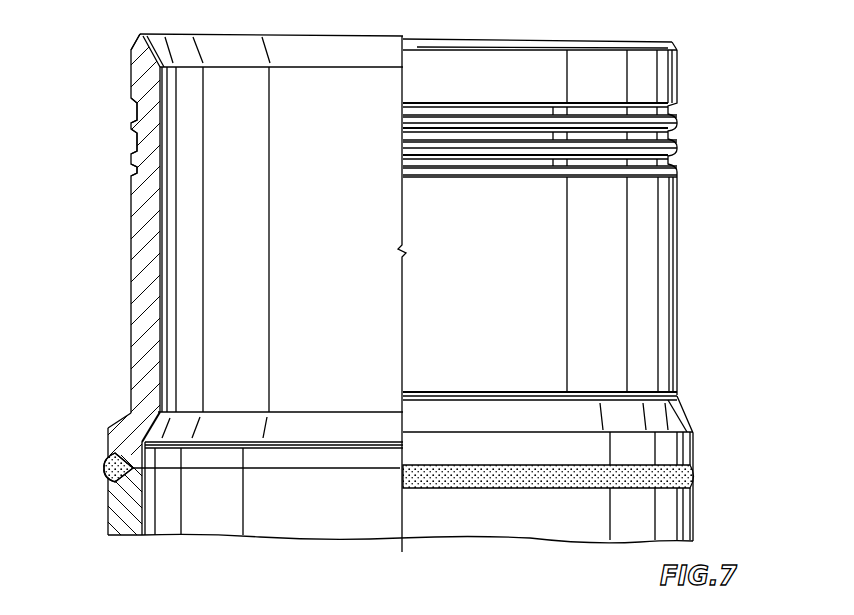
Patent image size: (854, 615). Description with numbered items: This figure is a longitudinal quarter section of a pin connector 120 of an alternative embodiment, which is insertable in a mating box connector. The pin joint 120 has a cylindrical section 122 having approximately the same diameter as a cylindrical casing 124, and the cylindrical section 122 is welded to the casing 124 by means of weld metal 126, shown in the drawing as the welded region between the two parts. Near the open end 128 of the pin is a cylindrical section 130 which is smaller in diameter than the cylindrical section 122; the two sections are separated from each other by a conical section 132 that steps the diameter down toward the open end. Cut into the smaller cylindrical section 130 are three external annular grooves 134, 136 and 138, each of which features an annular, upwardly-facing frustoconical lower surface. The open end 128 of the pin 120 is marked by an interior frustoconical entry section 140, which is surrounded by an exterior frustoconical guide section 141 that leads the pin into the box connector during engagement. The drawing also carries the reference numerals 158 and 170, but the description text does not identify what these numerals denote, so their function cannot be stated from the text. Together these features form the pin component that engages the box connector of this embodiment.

The pin connector 120 is at (660, 273).
The cylindrical section 122 is at (695, 448).
The cylindrical casing 124 is at (695, 516).
The weld metal 126 is at (700, 478).
The open end 128 is at (470, 35).
The cylindrical section 130 is at (130, 268).
The conical section 132 is at (120, 413).
The external annular groove 134 is at (137, 162).
The external annular groove 136 is at (137, 133).
The external annular groove 138 is at (137, 107).
The interior frustoconical entry section 140 is at (210, 48).
The exterior frustoconical guide section 141 is at (133, 37).
The corner edge 158 is at (692, 25).
The top portion 170 is at (63, 4).